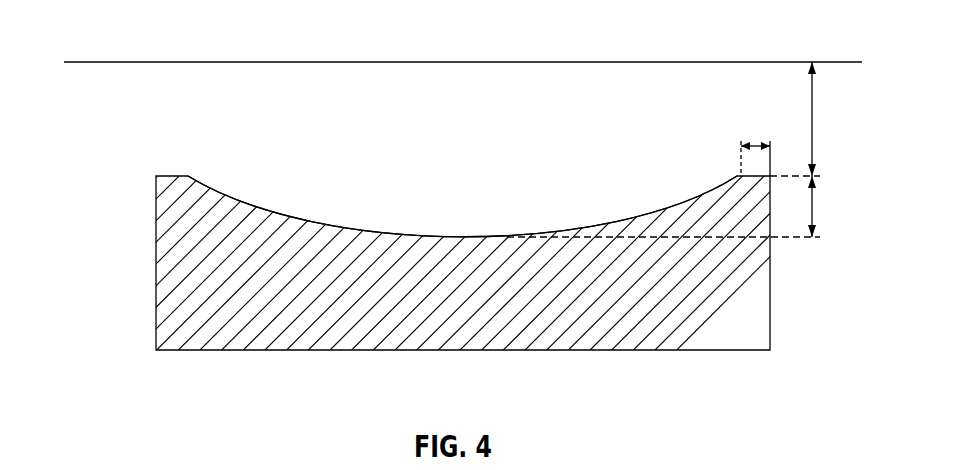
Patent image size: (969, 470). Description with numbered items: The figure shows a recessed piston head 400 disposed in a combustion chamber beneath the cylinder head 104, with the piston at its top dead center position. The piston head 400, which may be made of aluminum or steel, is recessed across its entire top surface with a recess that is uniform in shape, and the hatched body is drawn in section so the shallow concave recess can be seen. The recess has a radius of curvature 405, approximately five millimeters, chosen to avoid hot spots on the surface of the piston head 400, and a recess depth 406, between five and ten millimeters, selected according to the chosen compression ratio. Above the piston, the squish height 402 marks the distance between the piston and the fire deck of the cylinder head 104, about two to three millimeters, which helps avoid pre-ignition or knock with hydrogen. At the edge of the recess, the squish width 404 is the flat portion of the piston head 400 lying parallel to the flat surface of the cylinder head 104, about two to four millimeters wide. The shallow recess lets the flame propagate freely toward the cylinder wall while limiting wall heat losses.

The cylinder head 104 is at (447, 47).
The piston head 400 is at (273, 330).
The squish height 402 is at (813, 117).
The squish width 404 is at (756, 145).
The radius of curvature 405 is at (197, 184).
The recess depth 406 is at (813, 208).